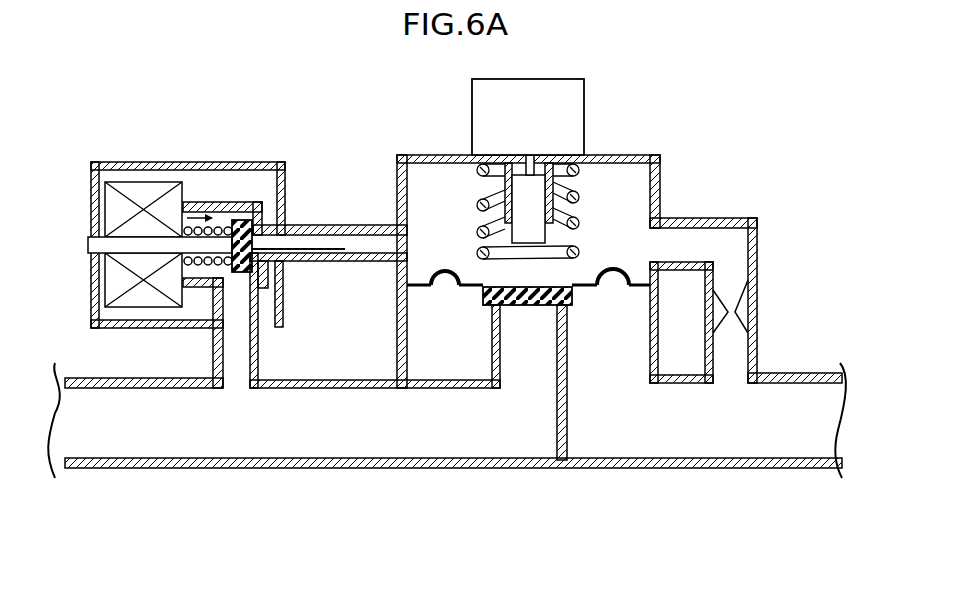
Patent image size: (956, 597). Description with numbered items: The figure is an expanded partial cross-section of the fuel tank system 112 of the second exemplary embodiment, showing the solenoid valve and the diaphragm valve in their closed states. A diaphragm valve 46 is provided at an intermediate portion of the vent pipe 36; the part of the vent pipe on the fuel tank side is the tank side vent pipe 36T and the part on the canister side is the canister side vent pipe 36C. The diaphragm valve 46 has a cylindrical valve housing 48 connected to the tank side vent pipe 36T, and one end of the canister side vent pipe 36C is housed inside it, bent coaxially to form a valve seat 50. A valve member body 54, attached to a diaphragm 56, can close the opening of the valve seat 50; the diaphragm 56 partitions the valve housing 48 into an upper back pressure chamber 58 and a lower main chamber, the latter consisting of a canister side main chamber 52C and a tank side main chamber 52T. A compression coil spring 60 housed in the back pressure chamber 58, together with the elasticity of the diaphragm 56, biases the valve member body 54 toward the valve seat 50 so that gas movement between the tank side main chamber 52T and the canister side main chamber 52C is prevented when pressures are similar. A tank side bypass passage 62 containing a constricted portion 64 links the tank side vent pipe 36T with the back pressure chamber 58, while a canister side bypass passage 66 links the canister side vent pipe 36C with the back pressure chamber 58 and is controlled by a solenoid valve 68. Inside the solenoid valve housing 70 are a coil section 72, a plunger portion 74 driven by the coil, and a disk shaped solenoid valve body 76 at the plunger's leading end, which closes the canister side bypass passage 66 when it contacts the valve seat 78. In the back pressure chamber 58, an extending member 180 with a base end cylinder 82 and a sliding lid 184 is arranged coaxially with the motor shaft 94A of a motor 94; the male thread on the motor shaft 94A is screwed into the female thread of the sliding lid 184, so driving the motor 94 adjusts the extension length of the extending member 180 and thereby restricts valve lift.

The fuel tank system 112 is at (806, 110).
The vent pipe 36 is at (453, 463).
The canister side vent pipe 36C is at (355, 468).
The tank side vent pipe 36T is at (773, 468).
The solenoid valve 68 is at (213, 232).
The solenoid valve housing 70 is at (91, 192).
The coil section 72 is at (105, 210).
The plunger portion 74 is at (88, 244).
The solenoid valve body 76 is at (242, 220).
The valve seat 78 is at (254, 247).
The valve housing 48 is at (398, 335).
The canister side bypass passage 66 is at (343, 265).
The diaphragm valve 46 is at (528, 226).
The back pressure chamber 58 is at (445, 197).
The tank side bypass passage 62 is at (748, 218).
The constricted portion 64 is at (735, 285).
The canister side main chamber 52C is at (552, 363).
The tank side main chamber 52T is at (636, 362).
The valve member body 54 is at (483, 297).
The diaphragm 56 is at (613, 270).
The valve seat 50 is at (491, 306).
The compression coil spring 60 is at (477, 256).
The extending member 180 is at (646, 177).
The sliding lid 184 is at (545, 242).
The base end cylinder 82 is at (545, 192).
The motor shaft 94A is at (583, 163).
The motor 94 is at (587, 100).